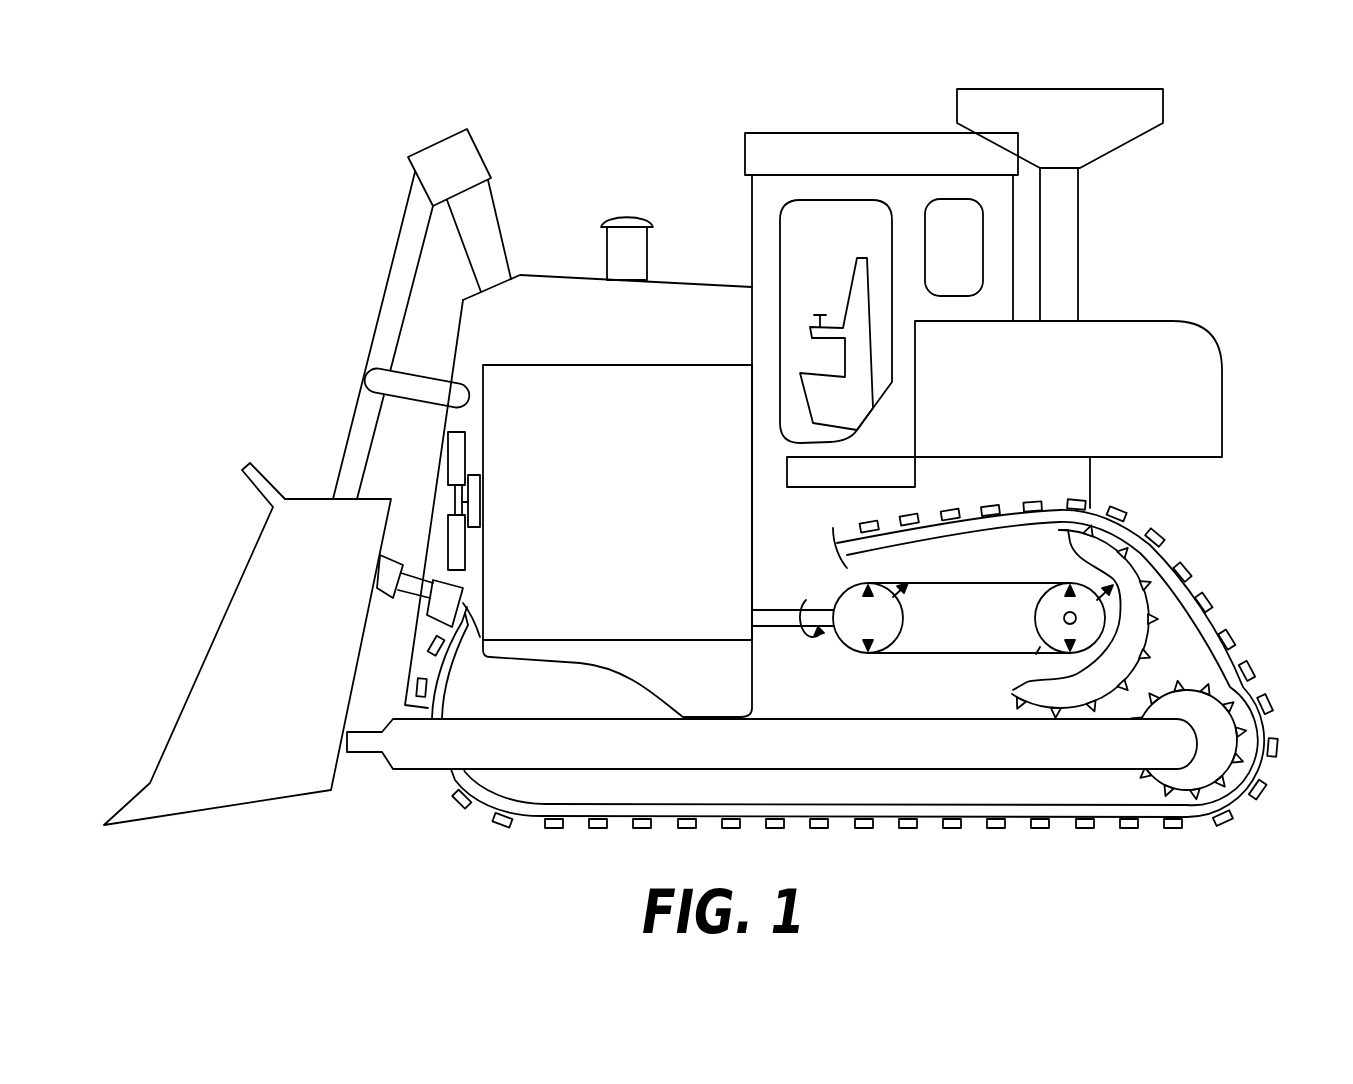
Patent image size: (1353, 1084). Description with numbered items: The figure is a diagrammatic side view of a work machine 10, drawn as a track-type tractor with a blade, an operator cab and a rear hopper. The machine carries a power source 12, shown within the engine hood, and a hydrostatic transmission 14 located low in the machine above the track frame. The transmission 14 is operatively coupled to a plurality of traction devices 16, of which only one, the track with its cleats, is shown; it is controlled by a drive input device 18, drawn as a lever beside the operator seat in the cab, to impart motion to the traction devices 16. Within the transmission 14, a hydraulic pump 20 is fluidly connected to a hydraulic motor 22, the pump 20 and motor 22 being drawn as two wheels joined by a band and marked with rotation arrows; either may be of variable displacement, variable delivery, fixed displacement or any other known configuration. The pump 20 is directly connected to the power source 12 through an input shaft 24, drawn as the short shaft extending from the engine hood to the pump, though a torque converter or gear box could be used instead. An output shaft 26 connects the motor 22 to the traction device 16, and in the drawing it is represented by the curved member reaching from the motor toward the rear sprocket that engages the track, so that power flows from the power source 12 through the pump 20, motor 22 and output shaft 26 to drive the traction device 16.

The work machine 10 is at (1203, 166).
The power source 12 is at (625, 523).
The hydrostatic transmission 14 is at (941, 687).
The traction device 16 is at (1163, 567).
The drive input device 18 is at (819, 316).
The hydraulic pump 20 is at (837, 640).
The hydraulic motor 22 is at (1043, 613).
The input shaft 24 is at (762, 611).
The output shaft 26 is at (1080, 620).